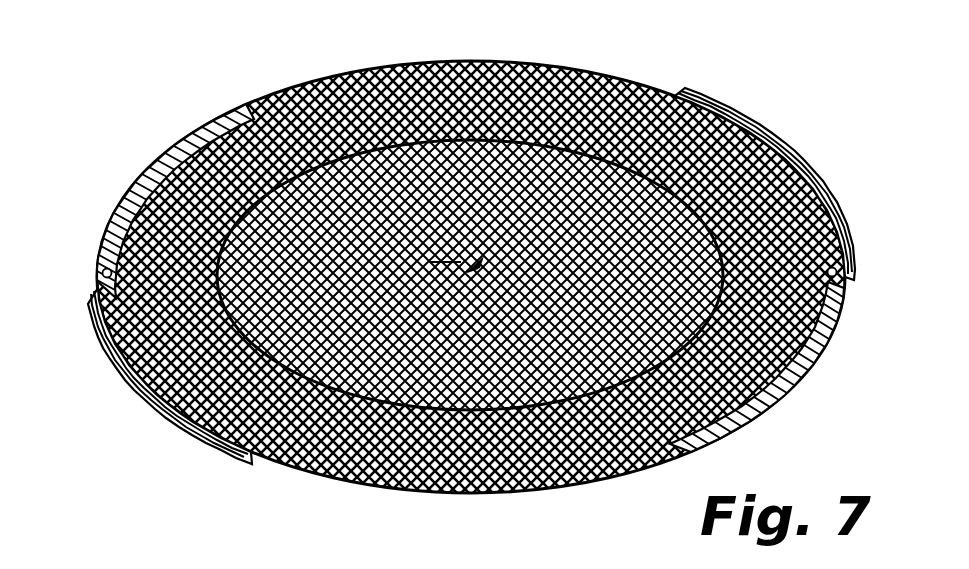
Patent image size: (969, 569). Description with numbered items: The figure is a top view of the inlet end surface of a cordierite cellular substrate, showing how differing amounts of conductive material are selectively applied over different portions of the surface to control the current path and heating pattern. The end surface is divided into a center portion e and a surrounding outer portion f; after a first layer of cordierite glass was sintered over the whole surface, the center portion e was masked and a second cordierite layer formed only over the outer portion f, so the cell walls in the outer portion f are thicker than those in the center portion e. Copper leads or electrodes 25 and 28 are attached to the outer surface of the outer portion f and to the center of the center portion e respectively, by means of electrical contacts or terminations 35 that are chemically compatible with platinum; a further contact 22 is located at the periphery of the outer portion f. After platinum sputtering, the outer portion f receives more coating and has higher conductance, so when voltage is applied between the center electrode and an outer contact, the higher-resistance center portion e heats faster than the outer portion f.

The first edge point of lens 22 is at (101, 273).
The copper lead or electrode 25 is at (838, 272).
The copper lead or electrode 28 is at (472, 266).
The electrical contact or termination 35 is at (150, 158).
The center portion e is at (445, 250).
The outer portion f is at (606, 84).